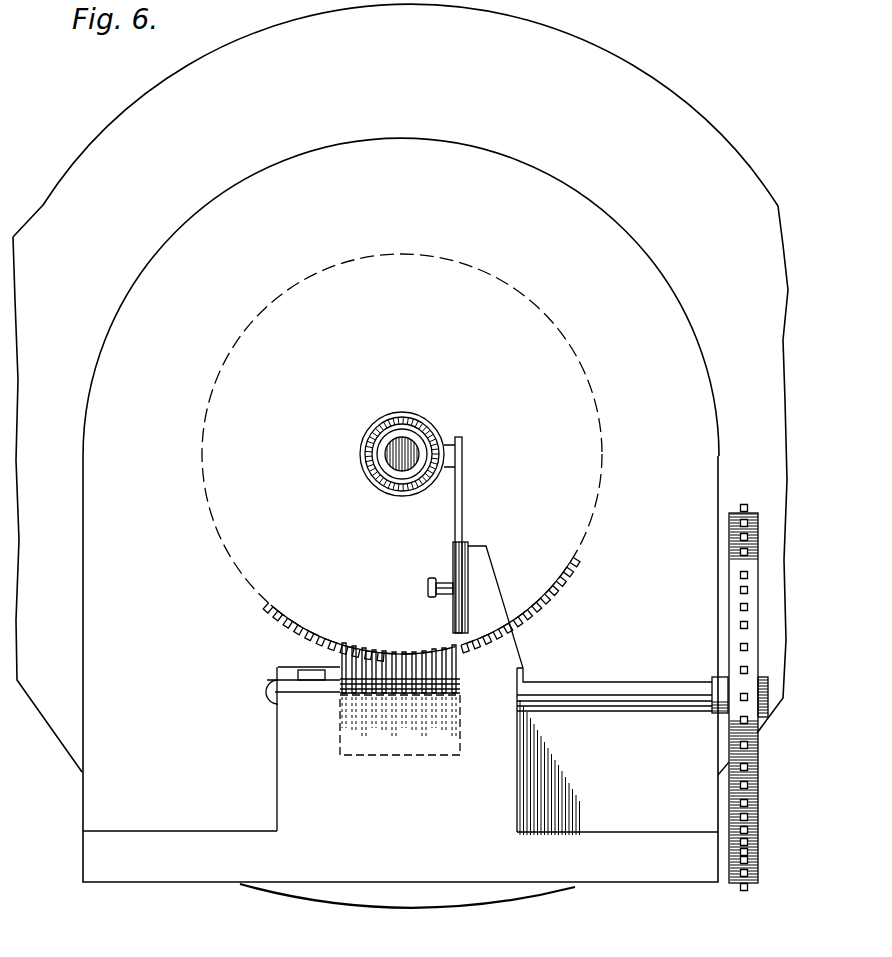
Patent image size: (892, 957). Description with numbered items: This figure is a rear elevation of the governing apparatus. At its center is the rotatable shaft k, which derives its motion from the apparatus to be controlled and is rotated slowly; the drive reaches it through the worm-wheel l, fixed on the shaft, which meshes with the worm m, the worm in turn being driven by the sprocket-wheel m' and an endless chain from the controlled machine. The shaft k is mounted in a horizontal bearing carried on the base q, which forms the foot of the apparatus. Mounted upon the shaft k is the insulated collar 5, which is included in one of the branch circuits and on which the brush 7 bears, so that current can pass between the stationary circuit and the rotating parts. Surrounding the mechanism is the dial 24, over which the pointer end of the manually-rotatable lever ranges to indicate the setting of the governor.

The dial 24 is at (667, 67).
The rotatable shaft k is at (385, 450).
The insulated collar 5 is at (385, 492).
The brush 7 is at (470, 494).
The worm-wheel l is at (525, 593).
The worm m is at (379, 737).
The sprocket-wheel m' is at (721, 698).
The base q is at (406, 523).